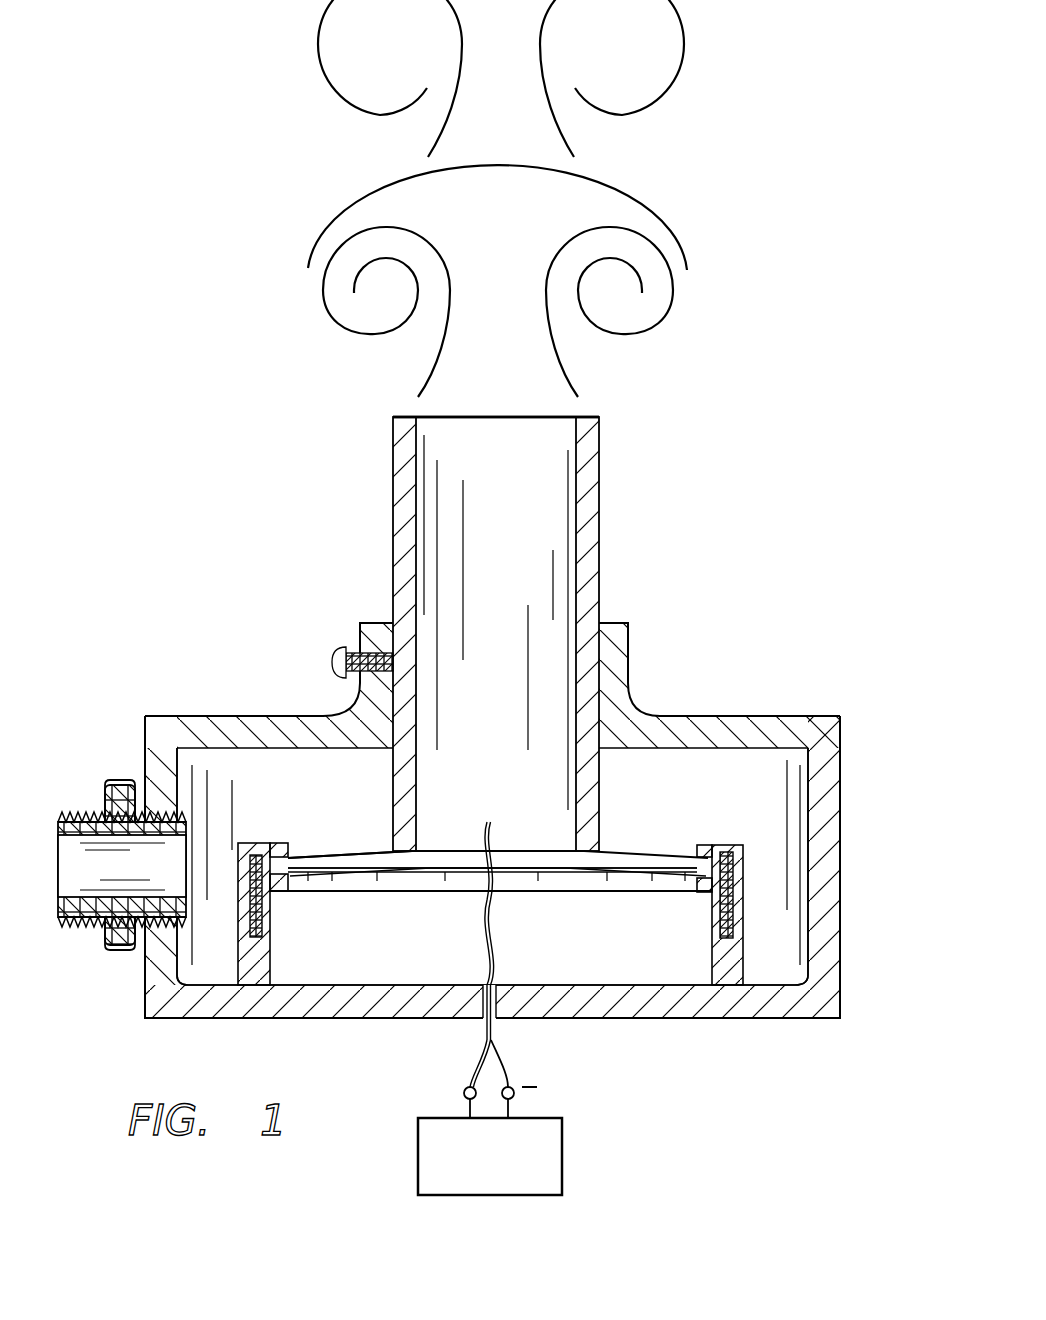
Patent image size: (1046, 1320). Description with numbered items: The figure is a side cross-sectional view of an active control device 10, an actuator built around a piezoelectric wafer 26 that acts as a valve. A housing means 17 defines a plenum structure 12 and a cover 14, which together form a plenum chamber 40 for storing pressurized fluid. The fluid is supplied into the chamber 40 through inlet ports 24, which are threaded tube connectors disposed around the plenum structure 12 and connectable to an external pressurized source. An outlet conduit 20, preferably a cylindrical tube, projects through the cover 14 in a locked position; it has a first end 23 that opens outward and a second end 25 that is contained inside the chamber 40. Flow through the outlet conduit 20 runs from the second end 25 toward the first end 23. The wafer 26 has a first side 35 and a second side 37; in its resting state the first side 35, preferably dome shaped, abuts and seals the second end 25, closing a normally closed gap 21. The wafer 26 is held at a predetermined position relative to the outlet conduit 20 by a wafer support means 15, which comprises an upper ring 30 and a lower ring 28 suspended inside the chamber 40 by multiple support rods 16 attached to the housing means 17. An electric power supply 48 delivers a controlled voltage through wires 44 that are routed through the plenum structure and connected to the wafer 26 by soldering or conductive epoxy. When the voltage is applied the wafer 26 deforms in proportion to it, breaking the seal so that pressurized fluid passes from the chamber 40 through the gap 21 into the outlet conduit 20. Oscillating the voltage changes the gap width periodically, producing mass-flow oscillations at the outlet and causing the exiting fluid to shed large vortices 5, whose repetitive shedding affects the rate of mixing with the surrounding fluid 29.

The vortices 5 is at (692, 36).
The surrounding fluid 29 is at (648, 162).
The active control device 10 is at (205, 466).
The plenum structure 12 is at (833, 783).
The cover 14 is at (738, 725).
The housing means 17 is at (200, 698).
The plenum chamber 40 is at (762, 801).
The outlet conduit 20 is at (603, 527).
The first end 23 is at (408, 417).
The inlet ports 24 is at (110, 781).
The support rods 16 is at (272, 958).
The wafer support means 15 is at (750, 873).
The gap 21 is at (392, 851).
The first side 35 is at (312, 856).
The second side 37 is at (407, 872).
The second end 25 is at (594, 856).
The upper ring 30 is at (675, 852).
The lower ring 28 is at (583, 880).
The wafer 26 is at (493, 917).
The wires 44 is at (492, 1041).
The electric power supply 48 is at (551, 1134).